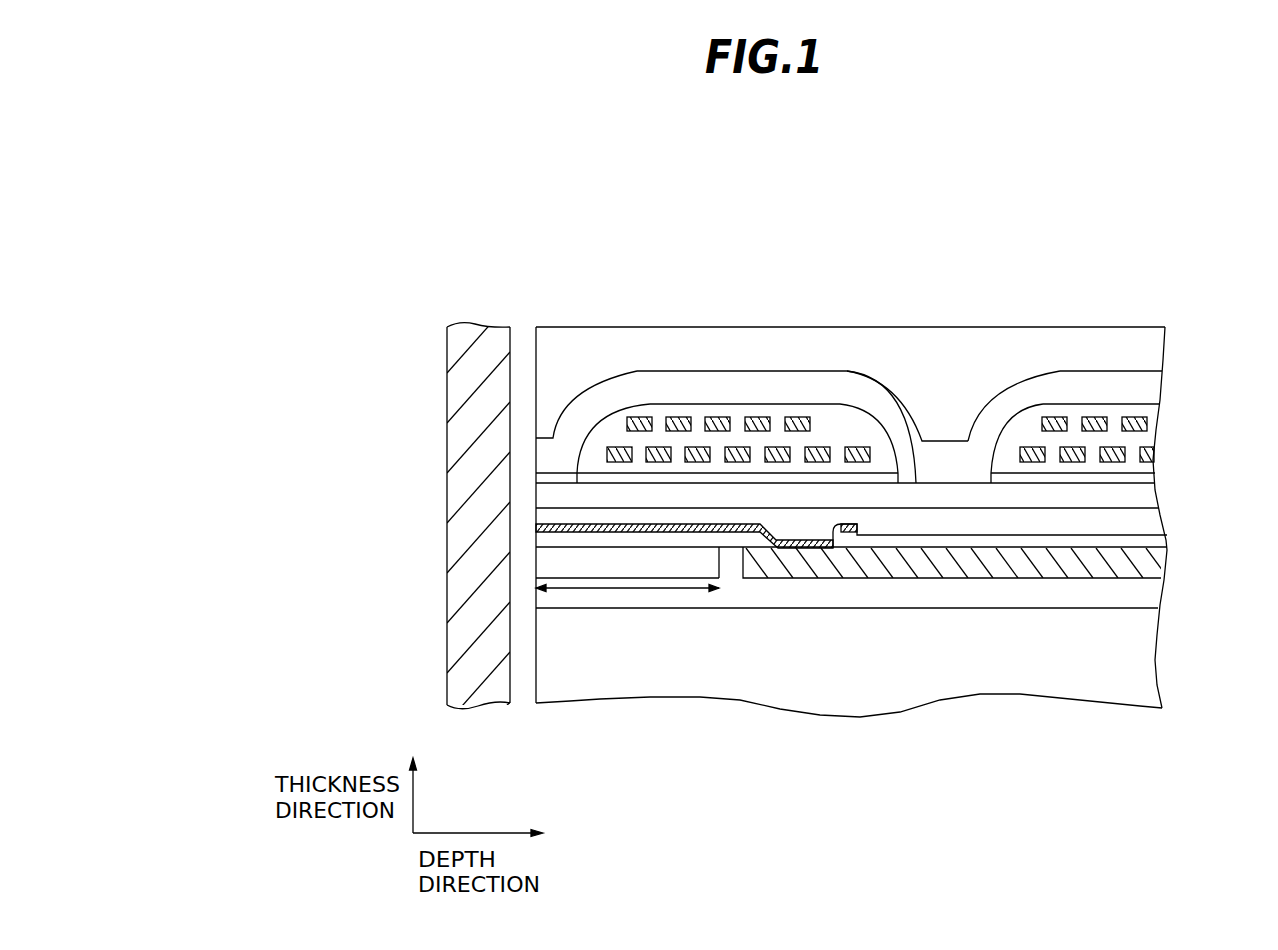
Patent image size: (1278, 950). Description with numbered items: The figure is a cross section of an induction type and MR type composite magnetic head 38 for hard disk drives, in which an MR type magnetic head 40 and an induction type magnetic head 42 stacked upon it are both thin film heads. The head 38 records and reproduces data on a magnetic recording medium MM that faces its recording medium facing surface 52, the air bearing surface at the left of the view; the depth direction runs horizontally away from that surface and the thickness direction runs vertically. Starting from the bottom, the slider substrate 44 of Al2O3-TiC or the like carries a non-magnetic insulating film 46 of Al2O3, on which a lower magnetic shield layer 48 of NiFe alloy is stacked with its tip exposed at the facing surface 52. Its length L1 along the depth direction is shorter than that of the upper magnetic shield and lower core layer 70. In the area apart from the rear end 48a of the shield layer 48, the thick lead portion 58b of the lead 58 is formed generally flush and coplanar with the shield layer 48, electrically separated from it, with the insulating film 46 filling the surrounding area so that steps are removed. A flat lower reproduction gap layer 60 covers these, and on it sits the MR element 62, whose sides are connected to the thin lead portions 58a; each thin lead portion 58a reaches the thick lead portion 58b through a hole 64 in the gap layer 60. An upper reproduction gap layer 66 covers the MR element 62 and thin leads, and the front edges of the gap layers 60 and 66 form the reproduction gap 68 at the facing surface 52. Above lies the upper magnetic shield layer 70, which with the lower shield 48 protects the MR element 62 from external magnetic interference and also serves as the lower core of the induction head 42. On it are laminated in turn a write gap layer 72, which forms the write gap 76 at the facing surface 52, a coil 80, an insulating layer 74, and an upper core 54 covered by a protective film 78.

The induction type and MR type composite magnetic head 38 is at (934, 180).
The MR type magnetic head 40 is at (1207, 582).
The induction type magnetic head 42 is at (929, 383).
The slider substrate 44 is at (557, 645).
The non-magnetic insulating film 46 is at (552, 600).
The lower magnetic shield layer 48 is at (554, 647).
The rear end of the lower magnetic shield layer 48a is at (719, 547).
The recording medium facing surface 52 is at (534, 697).
The upper core 54 is at (603, 397).
The lead 58 is at (880, 383).
The thin lead portion 58a is at (887, 394).
The thick lead portion 58b is at (908, 562).
The lower reproduction gap layer 60 is at (552, 537).
The MR element 62 is at (545, 528).
The hole 64 is at (797, 537).
The upper reproduction gap layer 66 is at (552, 513).
The reproduction gap 68 is at (708, 619).
The upper magnetic shield layer 70 is at (943, 497).
The write gap layer 72 is at (597, 473).
The insulating layer 74 is at (700, 410).
The write gap 76 is at (530, 477).
The protective film 78 is at (998, 345).
The coil 80 is at (648, 417).
The magnetic recording medium MM is at (455, 345).
The length of the lower magnetic shield layer L1 is at (623, 590).